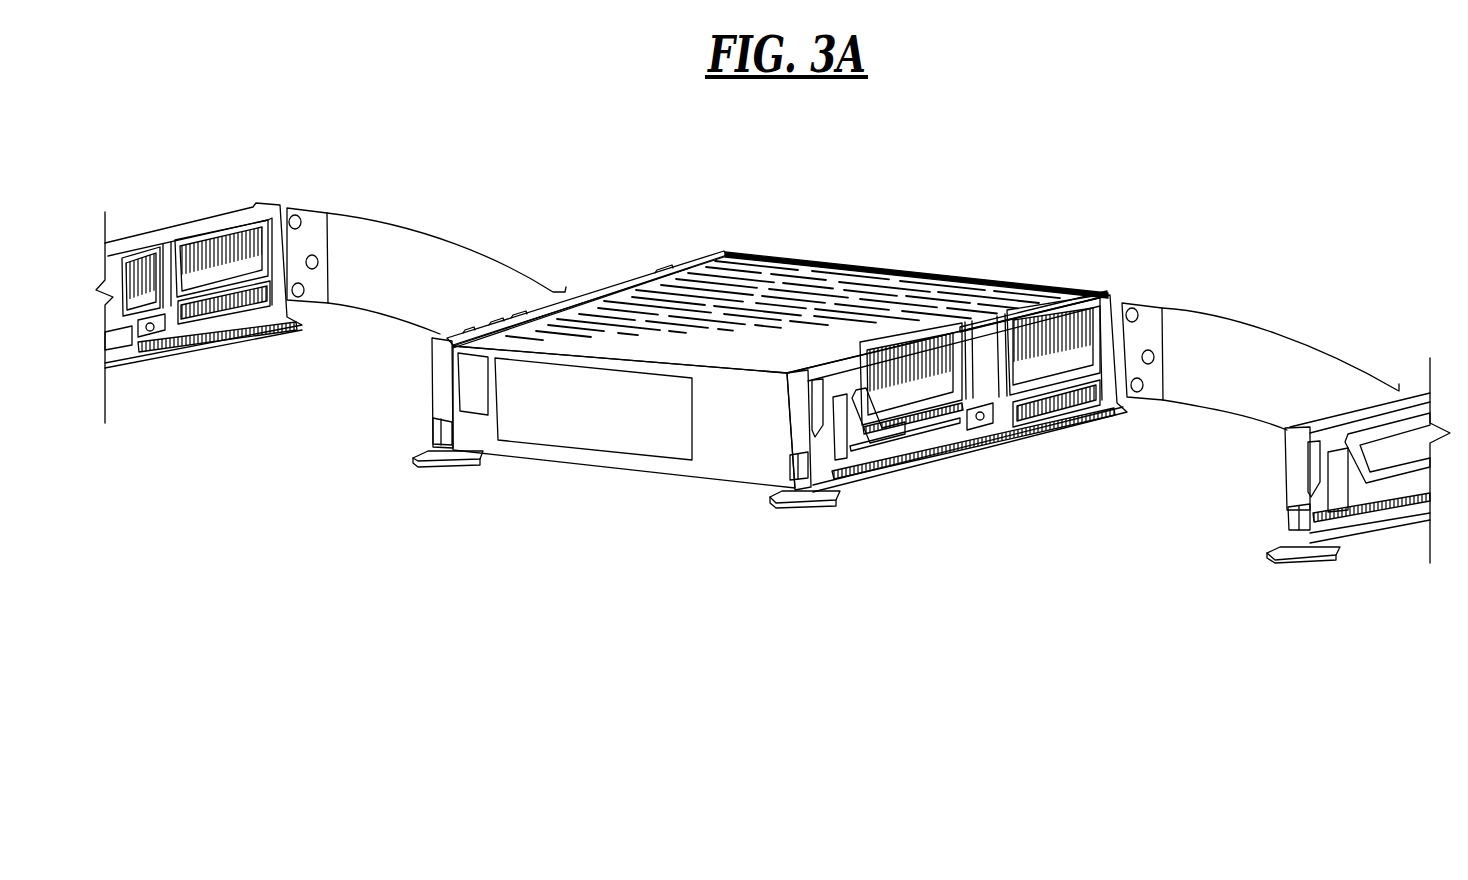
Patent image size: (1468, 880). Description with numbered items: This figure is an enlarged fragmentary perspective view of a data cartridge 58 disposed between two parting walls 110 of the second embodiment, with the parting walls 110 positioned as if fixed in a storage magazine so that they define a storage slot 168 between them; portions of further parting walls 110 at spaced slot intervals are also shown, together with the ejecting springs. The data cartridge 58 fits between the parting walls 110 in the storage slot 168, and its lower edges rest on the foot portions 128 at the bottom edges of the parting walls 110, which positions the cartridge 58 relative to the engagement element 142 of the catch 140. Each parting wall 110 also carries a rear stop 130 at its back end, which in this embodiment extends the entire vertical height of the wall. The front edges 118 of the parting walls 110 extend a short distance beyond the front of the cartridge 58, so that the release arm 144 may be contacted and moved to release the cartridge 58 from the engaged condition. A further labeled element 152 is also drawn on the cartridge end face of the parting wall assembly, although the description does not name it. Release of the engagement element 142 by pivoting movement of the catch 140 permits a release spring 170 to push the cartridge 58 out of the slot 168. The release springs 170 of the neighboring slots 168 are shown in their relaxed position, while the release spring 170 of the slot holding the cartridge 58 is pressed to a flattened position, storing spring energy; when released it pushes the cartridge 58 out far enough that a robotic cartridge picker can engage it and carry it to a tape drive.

The data cartridge 58 is at (827, 265).
The parting wall 110 is at (703, 265).
The front end 118 is at (432, 362).
The foot 128 is at (473, 467).
The rear stop 130 is at (1097, 290).
The catch 140 is at (875, 443).
The engagement element 142 is at (923, 433).
The release arm 144 is at (432, 428).
The indicator 152 is at (947, 425).
The storage slot 168 is at (305, 394).
The release spring 170 is at (413, 231).